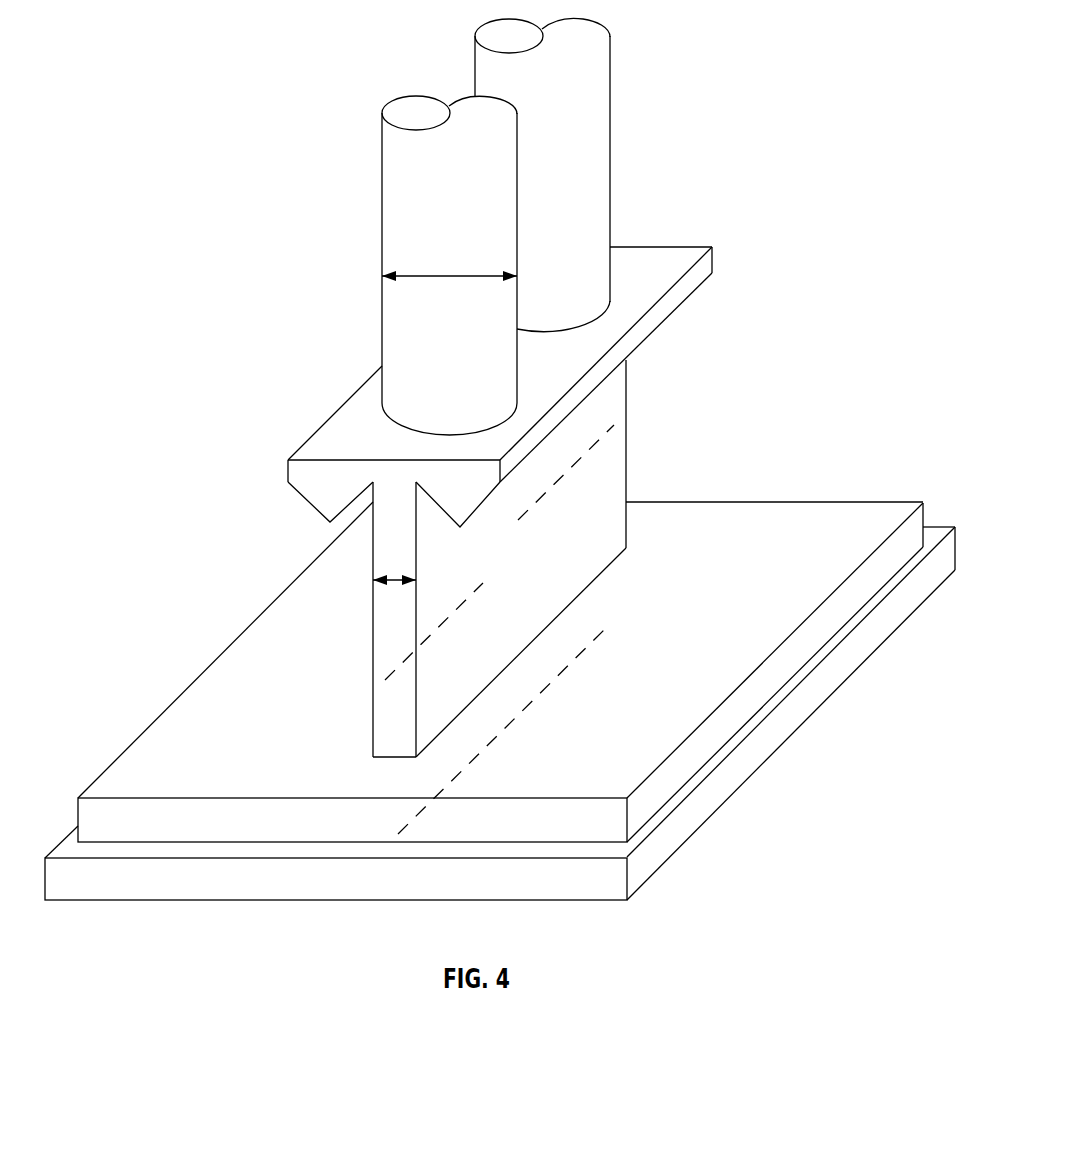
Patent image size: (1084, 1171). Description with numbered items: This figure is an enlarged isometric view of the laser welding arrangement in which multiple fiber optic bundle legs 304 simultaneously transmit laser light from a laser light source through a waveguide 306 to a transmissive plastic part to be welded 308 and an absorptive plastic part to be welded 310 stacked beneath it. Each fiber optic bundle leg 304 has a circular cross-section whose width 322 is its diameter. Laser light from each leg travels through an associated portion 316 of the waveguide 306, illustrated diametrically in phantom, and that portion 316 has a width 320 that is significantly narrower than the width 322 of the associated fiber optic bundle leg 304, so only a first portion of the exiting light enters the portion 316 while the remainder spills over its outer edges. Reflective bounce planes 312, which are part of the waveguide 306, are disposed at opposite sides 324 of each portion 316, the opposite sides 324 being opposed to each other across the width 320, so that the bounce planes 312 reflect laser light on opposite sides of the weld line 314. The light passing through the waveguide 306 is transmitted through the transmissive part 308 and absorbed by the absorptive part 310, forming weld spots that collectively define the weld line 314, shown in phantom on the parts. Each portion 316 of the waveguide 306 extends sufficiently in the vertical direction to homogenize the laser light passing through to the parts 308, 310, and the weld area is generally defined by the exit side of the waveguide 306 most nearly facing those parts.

The fiber optic bundle leg 304 is at (492, 233).
The waveguide 306 is at (603, 495).
The transmissive plastic part to be welded 308 is at (853, 588).
The absorptive plastic part to be welded 310 is at (783, 719).
The reflective bounce plane 312 is at (457, 495).
The weld line 314 is at (540, 691).
The portion of waveguide 316 is at (537, 499).
The width of portion of waveguide 320 is at (393, 582).
The width of fiber optic bundle leg 322 is at (440, 275).
The opposite sides of portion of waveguide 324 is at (373, 551).